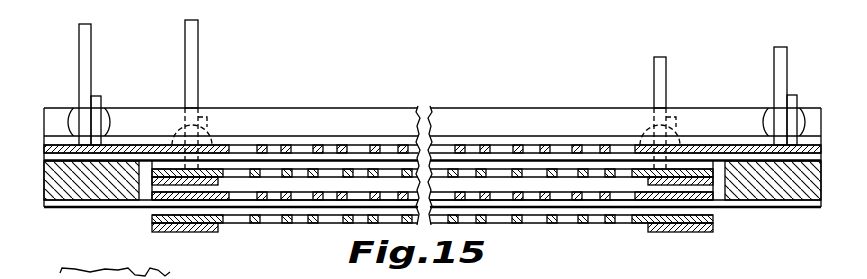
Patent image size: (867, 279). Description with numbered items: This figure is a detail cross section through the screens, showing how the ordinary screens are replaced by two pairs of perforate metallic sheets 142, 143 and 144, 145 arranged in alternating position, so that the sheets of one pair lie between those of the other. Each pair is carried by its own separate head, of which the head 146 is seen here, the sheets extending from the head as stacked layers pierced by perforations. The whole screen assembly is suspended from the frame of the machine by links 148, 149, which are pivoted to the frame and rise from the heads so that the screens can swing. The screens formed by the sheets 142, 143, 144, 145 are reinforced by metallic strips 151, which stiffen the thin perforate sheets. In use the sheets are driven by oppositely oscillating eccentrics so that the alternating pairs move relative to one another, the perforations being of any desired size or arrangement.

The perforate metallic sheet 142 is at (134, 136).
The perforate metallic sheet 143 is at (162, 203).
The perforate metallic sheet 144 is at (348, 172).
The perforate metallic sheet 145 is at (347, 223).
The head 146 is at (120, 20).
The link 148 is at (780, 58).
The link 149 is at (198, 41).
The metallic strip 151 is at (719, 164).